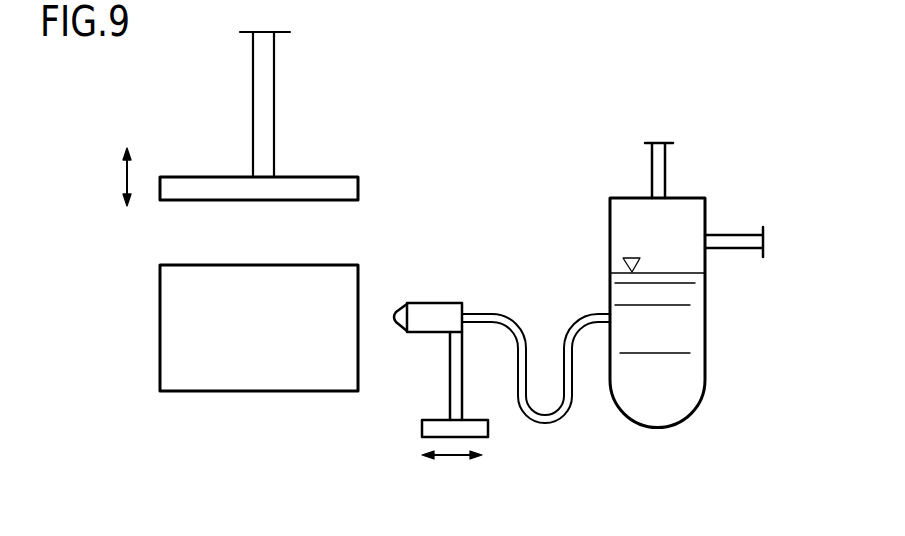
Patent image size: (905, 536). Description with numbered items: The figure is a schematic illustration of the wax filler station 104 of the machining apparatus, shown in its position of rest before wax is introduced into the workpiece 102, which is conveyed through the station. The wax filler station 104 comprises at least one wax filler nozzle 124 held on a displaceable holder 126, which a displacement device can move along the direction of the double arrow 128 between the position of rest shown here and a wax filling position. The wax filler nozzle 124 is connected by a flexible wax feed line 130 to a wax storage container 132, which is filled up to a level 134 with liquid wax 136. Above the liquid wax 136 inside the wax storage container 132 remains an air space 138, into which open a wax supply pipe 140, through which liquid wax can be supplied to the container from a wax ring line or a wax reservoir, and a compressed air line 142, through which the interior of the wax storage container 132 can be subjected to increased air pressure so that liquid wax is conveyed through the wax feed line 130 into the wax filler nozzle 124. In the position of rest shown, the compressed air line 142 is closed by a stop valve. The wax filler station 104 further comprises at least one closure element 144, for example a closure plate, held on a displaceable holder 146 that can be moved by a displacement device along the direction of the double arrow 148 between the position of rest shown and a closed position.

The workpiece 102 is at (172, 352).
The wax filler station 104 is at (252, 116).
The wax filler nozzle 124 is at (425, 312).
The displaceable holder 126 is at (452, 358).
The double arrow 128 is at (452, 458).
The flexible wax feed line 130 is at (500, 315).
The wax storage container 132 is at (623, 197).
The level 134 is at (678, 268).
The liquid wax 136 is at (678, 372).
The air space 138 is at (677, 232).
The wax supply pipe 140 is at (743, 243).
The compressed air line 142 is at (652, 152).
The closure element 144 is at (325, 190).
The displaceable holder 146 is at (259, 85).
The double arrow 148 is at (122, 172).